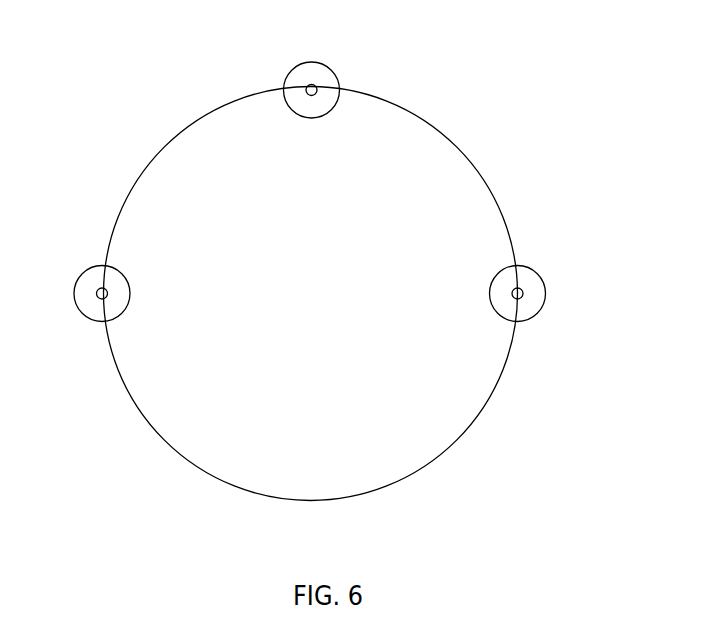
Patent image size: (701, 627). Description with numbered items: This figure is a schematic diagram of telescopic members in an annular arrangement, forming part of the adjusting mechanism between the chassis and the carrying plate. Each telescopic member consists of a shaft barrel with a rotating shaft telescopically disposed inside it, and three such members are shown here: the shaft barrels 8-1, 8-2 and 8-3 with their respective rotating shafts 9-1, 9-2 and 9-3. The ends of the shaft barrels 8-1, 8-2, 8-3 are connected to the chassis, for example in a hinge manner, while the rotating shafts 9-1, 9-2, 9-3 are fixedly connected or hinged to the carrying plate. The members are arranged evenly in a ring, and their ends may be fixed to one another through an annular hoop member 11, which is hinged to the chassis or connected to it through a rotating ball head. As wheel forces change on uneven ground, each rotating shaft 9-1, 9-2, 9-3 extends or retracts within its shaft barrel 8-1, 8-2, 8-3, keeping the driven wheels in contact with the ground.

The annular hoop member 11 is at (432, 124).
The shaft barrel 8-1 is at (333, 71).
The shaft barrel 8-2 is at (541, 277).
The shaft barrel 8-3 is at (90, 321).
The rotating shaft 9-1 is at (311, 84).
The rotating shaft 9-2 is at (518, 298).
The rotating shaft 9-3 is at (98, 290).